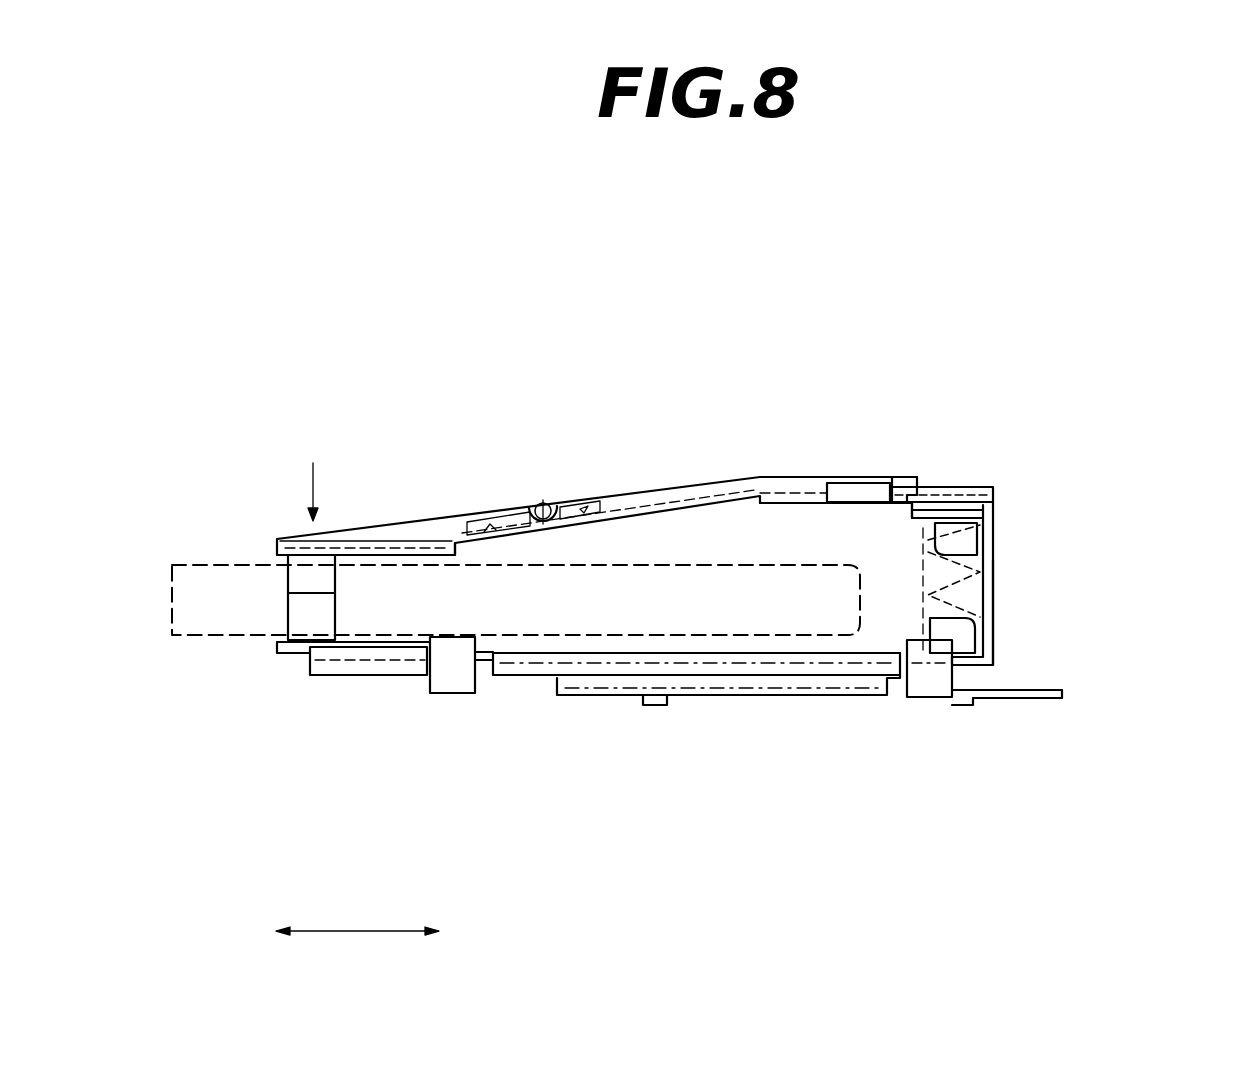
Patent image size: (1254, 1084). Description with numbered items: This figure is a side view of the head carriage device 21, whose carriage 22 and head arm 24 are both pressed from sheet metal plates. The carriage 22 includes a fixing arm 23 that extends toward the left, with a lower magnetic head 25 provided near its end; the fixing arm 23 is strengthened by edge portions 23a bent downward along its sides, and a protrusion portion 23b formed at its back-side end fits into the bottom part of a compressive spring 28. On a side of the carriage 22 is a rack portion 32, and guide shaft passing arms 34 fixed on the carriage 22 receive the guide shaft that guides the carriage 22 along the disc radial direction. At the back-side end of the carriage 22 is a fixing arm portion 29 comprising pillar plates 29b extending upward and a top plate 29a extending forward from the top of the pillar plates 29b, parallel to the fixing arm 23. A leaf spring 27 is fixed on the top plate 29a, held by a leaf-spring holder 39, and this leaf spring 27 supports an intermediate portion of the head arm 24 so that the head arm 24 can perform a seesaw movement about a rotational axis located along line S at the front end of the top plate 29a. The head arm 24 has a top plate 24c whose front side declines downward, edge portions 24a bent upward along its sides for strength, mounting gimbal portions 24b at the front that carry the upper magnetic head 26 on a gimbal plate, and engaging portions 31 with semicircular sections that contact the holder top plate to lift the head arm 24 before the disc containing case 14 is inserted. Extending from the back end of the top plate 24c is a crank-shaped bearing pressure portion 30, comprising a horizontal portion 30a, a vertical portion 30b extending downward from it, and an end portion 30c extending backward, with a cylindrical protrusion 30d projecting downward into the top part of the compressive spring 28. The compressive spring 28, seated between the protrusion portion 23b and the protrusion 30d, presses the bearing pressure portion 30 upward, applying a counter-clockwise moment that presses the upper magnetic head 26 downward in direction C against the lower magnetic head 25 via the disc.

The head carriage device 21 is at (1058, 229).
The disc containing case 14 is at (620, 565).
The carriage 22 is at (832, 672).
The fixing arm 23 is at (522, 667).
The edge portions 23a is at (695, 672).
The protrusion portion 23b is at (980, 636).
The head arm 24 is at (712, 484).
The edge portions 24a is at (760, 478).
The mounting gimbal portions 24b is at (357, 540).
The top plate 24c is at (440, 522).
The lower magnetic head 25 is at (285, 620).
The upper magnetic head 26 is at (288, 580).
The leaf spring 27 is at (852, 483).
The compressive spring 28 is at (965, 580).
The fixing arm portion 29 is at (995, 538).
The top plate 29a is at (980, 487).
The pillar plates 29b is at (995, 612).
The bearing pressure portion 30 is at (920, 485).
The horizontal portion 30a is at (877, 477).
The vertical portion 30b is at (952, 487).
The end portion 30c is at (910, 518).
The protrusion 30d is at (978, 562).
The engaging portions 31 is at (545, 498).
The rack portion 32 is at (1028, 700).
The guide shaft passing arms 34 is at (445, 690).
The leaf-spring holder 39 is at (985, 500).
The line S is at (907, 468).